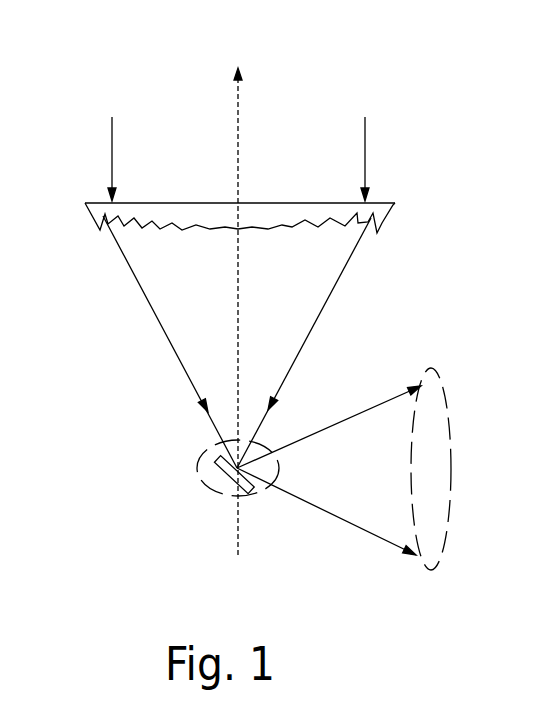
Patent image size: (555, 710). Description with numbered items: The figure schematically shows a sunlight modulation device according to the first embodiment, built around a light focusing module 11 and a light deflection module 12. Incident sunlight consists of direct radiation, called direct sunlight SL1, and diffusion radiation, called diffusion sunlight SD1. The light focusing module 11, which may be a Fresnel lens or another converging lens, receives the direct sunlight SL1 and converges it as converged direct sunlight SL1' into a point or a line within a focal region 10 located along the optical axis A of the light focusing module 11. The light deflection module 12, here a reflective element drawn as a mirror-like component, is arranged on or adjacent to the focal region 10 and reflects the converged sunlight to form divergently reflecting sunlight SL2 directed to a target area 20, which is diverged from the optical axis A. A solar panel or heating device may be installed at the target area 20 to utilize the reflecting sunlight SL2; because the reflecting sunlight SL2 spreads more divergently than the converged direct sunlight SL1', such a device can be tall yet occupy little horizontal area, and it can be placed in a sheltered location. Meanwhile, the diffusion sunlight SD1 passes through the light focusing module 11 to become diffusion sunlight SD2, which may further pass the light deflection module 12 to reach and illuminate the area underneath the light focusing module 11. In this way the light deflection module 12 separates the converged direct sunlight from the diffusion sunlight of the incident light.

The focal region 10 is at (198, 460).
The light focusing module 11 is at (395, 204).
The light deflection module 12 is at (208, 488).
The target area 20 is at (450, 426).
The optical axis A is at (239, 308).
The direct sunlight SL1 is at (193, 159).
The converged direct sunlight SL1' is at (202, 342).
The reflecting sunlight SL2 is at (326, 512).
The diffusion sunlight SD1 is at (202, 178).
The diffusion sunlight SD2 is at (445, 345).